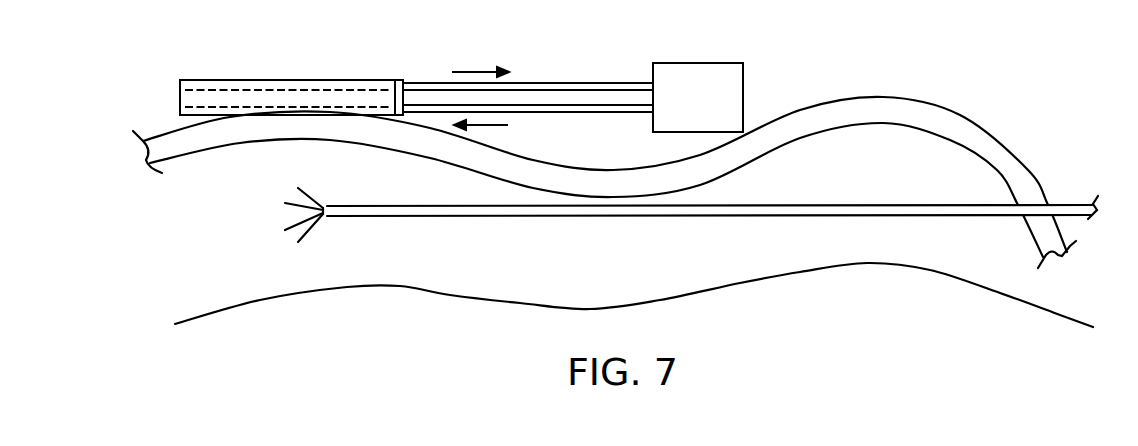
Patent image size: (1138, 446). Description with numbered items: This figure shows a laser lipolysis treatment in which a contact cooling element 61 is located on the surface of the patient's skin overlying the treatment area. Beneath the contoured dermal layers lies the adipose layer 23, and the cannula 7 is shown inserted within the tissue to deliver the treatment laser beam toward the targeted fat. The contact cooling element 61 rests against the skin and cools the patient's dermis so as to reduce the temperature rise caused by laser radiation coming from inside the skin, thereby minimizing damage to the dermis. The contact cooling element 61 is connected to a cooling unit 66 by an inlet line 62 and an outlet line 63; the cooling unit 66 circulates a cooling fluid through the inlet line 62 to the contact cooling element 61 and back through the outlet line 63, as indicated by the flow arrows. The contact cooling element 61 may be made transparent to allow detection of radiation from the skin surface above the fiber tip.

The cannula 7 is at (866, 203).
The adipose layer 23 is at (625, 286).
The contact cooling element 61 is at (316, 79).
The inlet line 62 is at (499, 125).
The outlet line 63 is at (497, 72).
The cooling unit 66 is at (713, 108).